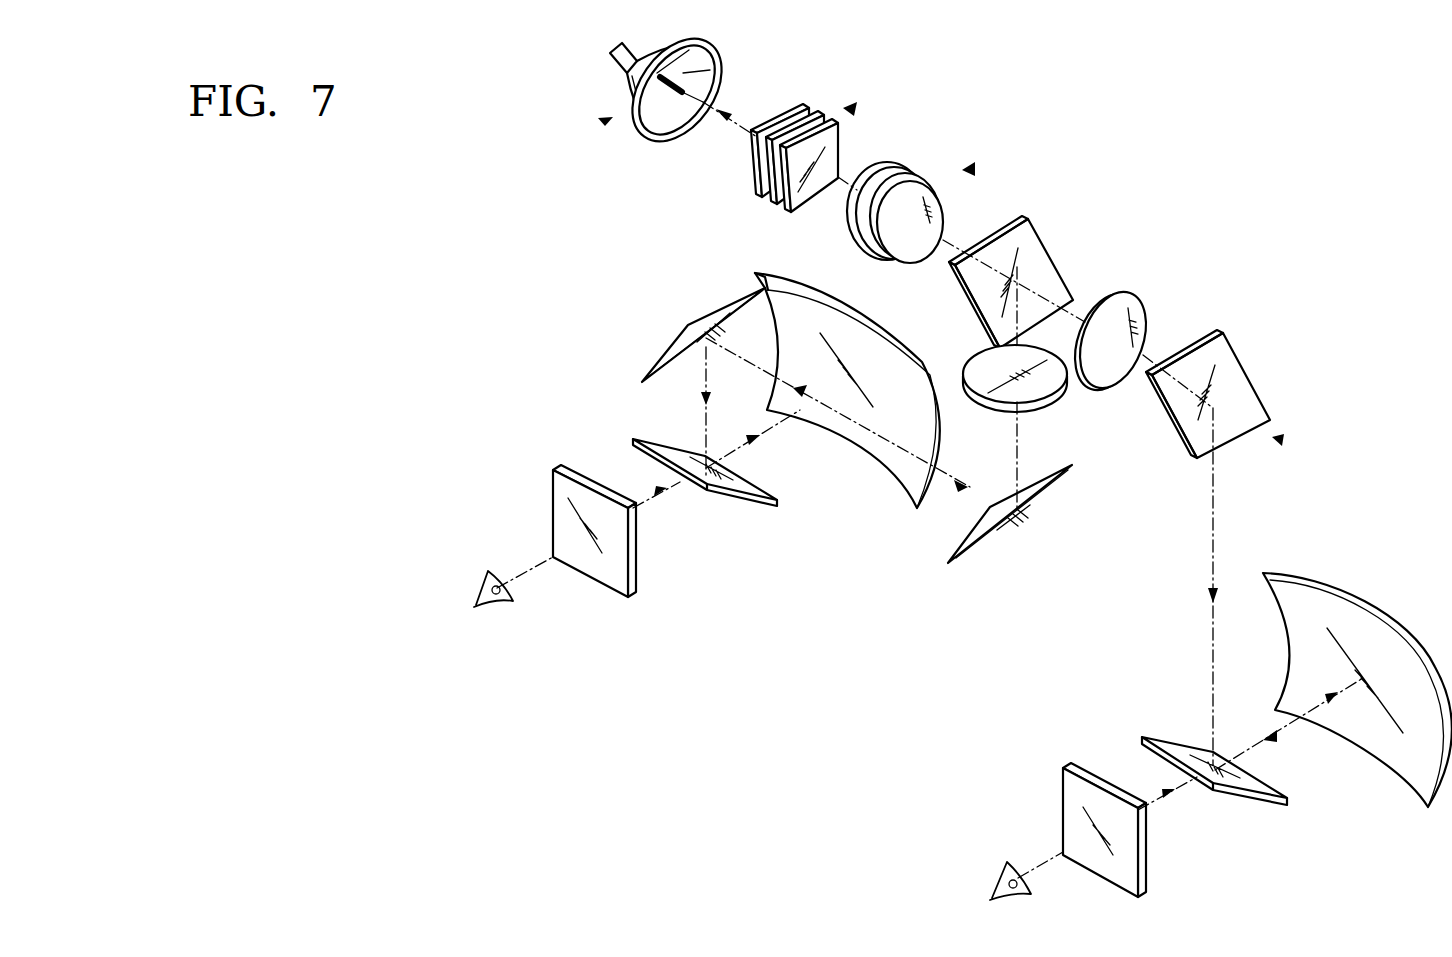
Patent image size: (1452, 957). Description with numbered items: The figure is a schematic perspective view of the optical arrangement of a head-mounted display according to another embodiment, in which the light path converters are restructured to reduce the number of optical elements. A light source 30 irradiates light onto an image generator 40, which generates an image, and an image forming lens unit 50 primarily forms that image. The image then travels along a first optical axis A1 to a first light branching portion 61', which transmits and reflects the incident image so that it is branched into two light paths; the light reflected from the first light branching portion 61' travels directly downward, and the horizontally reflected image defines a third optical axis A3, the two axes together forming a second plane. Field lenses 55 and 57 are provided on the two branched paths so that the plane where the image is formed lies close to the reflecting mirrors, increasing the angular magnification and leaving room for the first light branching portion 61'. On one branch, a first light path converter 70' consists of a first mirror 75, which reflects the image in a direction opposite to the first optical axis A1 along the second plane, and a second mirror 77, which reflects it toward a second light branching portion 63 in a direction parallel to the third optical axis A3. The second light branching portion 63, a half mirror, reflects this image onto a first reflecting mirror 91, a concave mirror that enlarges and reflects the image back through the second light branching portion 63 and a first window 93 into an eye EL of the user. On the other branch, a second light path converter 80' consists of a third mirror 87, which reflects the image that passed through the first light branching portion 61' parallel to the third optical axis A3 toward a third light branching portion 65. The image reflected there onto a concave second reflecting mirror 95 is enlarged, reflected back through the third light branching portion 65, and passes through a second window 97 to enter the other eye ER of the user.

The light source 30 is at (609, 120).
The image generator 40 is at (847, 107).
The image forming lens unit 50 is at (964, 169).
The first light branching portion 61' is at (1031, 267).
The field lens 57 is at (1138, 297).
The field lens 55 is at (1053, 388).
The third mirror 87 is at (1181, 418).
The second light path converter 80' is at (1268, 418).
The first reflecting mirror 91 is at (902, 463).
The second mirror 77 is at (717, 343).
The first mirror 75 is at (980, 544).
The first light path converter 70' is at (857, 495).
The second light branching portion 63 is at (737, 491).
The first window 93 is at (616, 576).
The third light branching portion 65 is at (1180, 753).
The second reflecting mirror 95 is at (1367, 620).
The second window 97 is at (1075, 795).
The first optical axis A1 is at (934, 263).
The third optical axis A3 is at (1014, 476).
The eye EL is at (486, 579).
The eye ER is at (1004, 885).